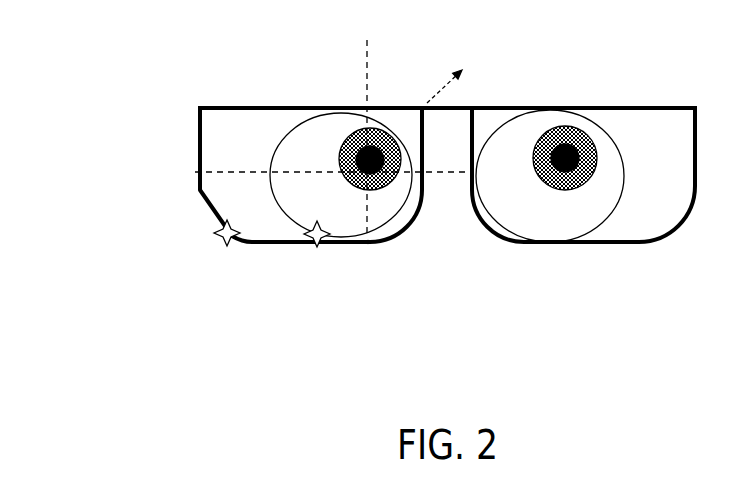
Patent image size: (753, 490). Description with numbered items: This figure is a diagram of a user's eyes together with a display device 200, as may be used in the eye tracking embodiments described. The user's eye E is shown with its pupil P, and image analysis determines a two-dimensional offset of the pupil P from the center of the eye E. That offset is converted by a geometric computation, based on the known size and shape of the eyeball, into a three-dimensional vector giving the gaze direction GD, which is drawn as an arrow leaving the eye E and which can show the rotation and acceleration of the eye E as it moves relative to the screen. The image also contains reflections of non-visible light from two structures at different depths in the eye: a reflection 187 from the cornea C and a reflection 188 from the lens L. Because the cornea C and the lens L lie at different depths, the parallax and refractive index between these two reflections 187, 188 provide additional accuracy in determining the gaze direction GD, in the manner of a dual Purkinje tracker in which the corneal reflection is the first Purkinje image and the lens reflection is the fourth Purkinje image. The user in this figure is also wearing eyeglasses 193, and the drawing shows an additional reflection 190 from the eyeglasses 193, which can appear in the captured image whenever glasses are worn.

The eyeglasses / head-mounted device 200 is at (391, 225).
The eyeglasses 193 is at (391, 152).
The reflection 187 is at (348, 142).
The reflection 188 is at (299, 269).
The reflections 190 is at (148, 285).
The eye E is at (215, 175).
The pupil P is at (342, 170).
The lens L is at (392, 130).
The cornea C is at (374, 279).
The gaze direction GD is at (473, 64).